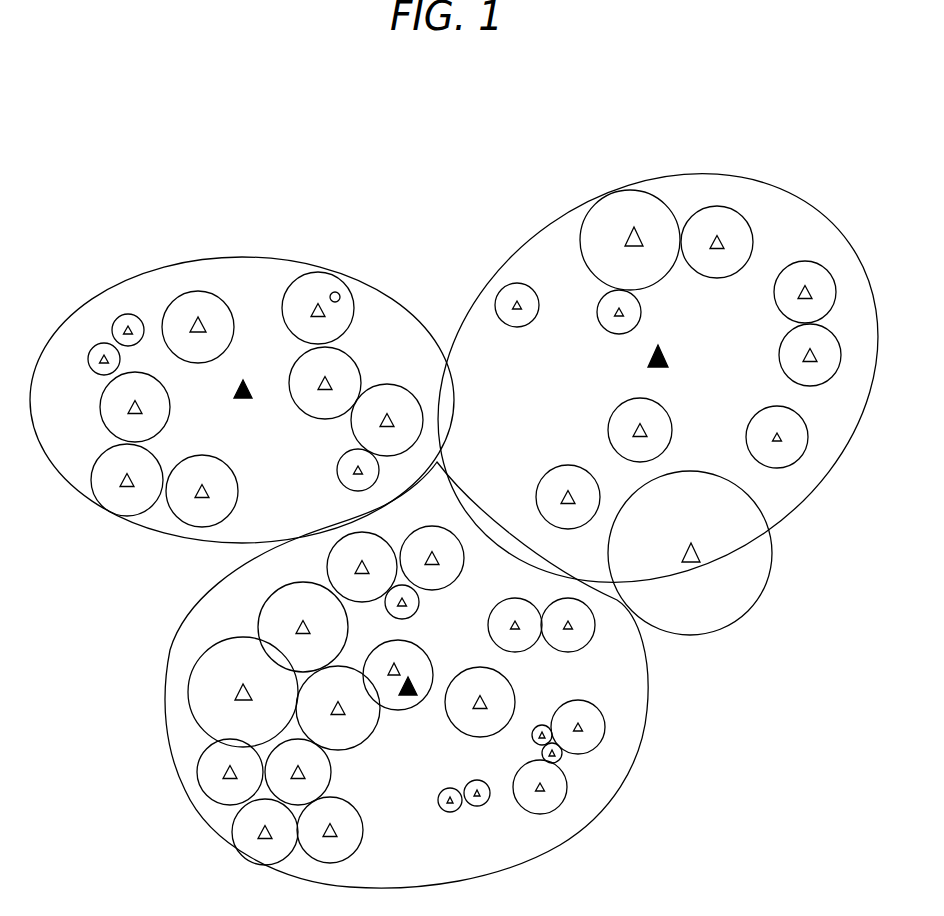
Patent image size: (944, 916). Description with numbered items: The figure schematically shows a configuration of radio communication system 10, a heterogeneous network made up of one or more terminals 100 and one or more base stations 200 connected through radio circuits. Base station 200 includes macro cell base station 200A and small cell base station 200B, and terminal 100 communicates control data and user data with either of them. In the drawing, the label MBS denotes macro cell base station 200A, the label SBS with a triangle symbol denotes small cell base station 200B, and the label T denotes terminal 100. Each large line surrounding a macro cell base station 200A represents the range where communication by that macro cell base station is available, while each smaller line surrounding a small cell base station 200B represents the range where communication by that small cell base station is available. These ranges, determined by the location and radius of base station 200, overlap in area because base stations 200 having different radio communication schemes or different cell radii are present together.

The radio communication system 10 is at (484, 148).
The terminal 100 is at (341, 293).
The base station 200 is at (230, 235).
The macro cell base station 200A is at (244, 378).
The small cell base station 200B is at (199, 317).
The small cell base station SBS is at (475, 468).
The macro cell base station MBS is at (403, 750).
The terminal T is at (338, 312).